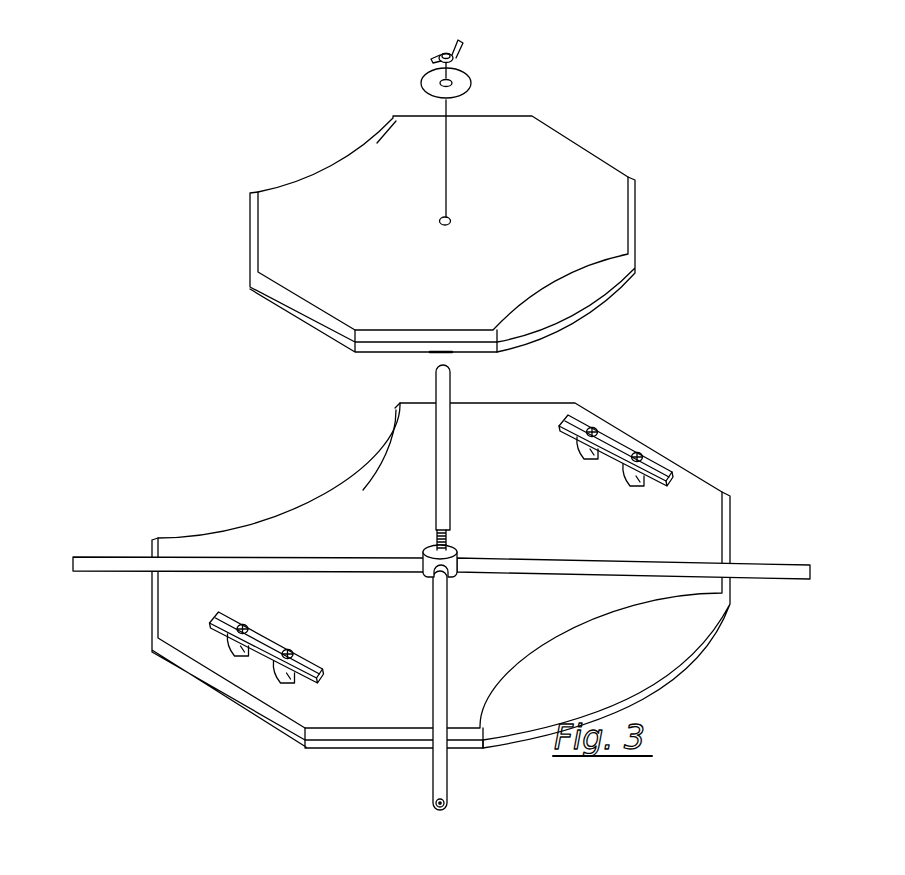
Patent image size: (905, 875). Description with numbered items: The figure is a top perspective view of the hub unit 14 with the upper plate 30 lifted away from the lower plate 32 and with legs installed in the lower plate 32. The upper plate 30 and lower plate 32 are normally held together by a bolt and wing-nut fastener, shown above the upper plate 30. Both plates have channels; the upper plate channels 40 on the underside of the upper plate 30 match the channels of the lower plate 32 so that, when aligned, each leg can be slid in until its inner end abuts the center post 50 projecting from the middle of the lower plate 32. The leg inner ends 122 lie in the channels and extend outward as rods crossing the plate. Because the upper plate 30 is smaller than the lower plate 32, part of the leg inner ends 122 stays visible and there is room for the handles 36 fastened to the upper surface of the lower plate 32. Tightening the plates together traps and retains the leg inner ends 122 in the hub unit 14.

The hub unit 14 is at (443, 425).
The upper plate 30 is at (360, 148).
The lower plate 32 is at (318, 710).
The handles 36 is at (613, 442).
The upper plate channels 40 is at (437, 351).
The center post 50 is at (458, 547).
The leg inner ends 122 is at (446, 387).